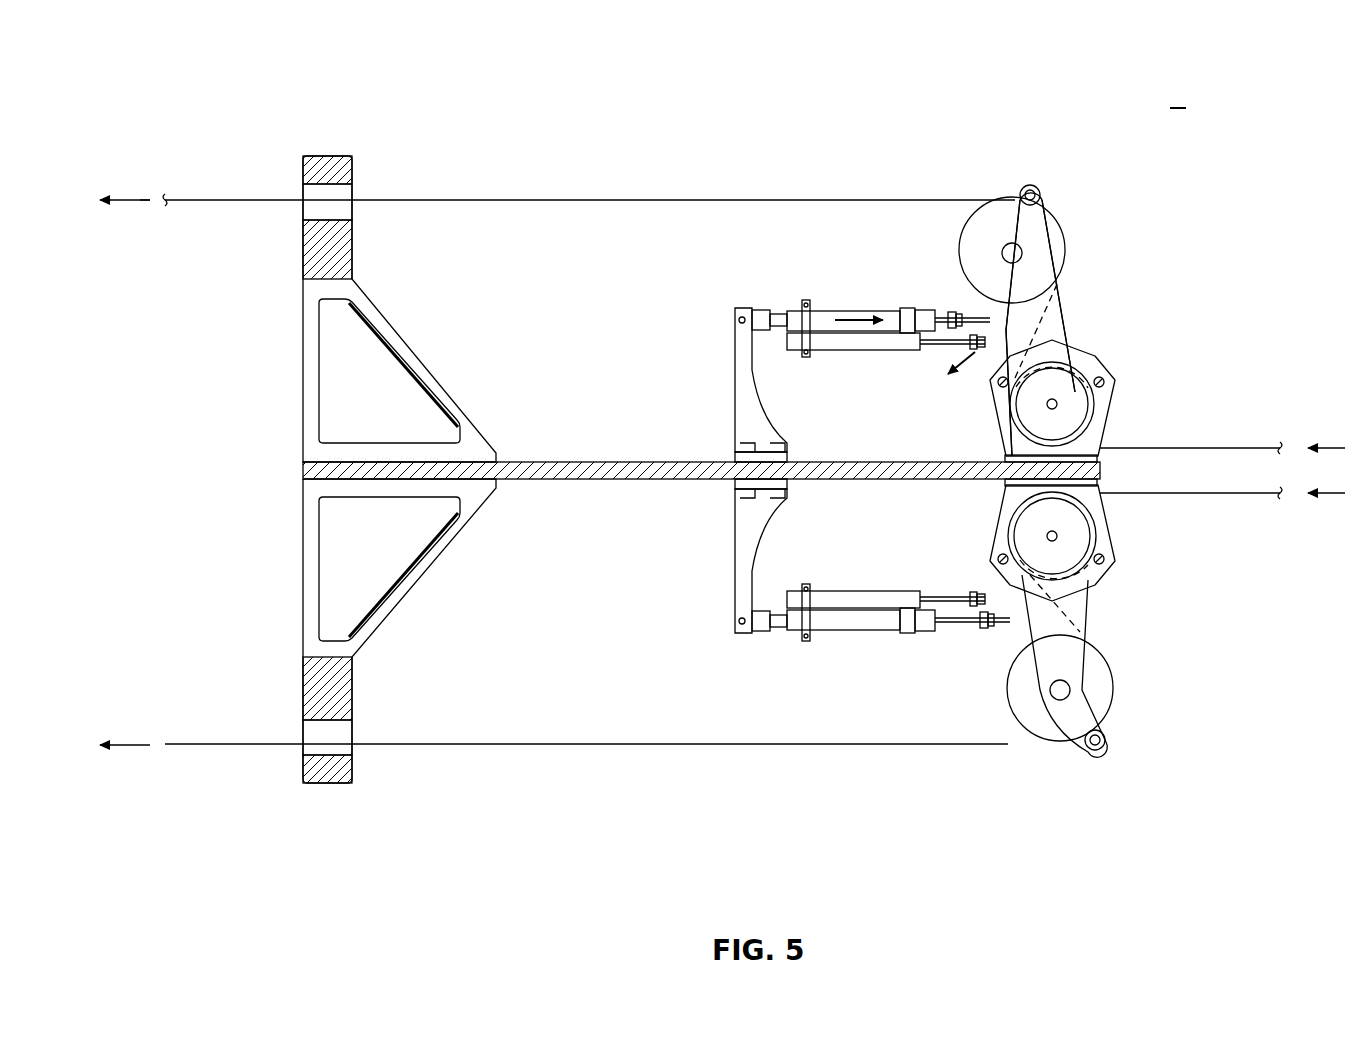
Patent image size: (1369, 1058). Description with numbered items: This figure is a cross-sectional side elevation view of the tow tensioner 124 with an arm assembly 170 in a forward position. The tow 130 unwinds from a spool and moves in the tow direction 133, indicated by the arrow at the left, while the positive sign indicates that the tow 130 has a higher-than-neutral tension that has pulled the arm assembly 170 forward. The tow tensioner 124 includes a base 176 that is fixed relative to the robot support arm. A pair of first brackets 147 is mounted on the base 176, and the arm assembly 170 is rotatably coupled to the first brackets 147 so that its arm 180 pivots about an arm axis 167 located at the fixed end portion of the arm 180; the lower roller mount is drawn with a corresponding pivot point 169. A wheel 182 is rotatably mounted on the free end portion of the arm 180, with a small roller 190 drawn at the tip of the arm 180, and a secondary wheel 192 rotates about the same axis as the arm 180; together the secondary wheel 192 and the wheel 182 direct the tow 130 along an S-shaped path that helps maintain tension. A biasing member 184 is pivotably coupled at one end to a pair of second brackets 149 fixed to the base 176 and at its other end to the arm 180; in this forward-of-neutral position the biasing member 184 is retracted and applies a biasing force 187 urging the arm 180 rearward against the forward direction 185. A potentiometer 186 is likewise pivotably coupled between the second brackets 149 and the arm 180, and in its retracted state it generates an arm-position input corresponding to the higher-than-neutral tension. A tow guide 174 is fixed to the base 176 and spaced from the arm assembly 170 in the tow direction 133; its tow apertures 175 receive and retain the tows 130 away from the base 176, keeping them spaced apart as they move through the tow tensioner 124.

The tow tensioner 124 is at (1200, 84).
The tow 130 is at (714, 198).
The tow direction 133 is at (140, 197).
The first brackets 147 is at (1098, 432).
The second brackets 149 is at (746, 394).
The arm axis 167 is at (1057, 400).
The pivot axis 169 is at (1058, 538).
The arm assembly 170 is at (1025, 176).
The tow guide 174 is at (338, 153).
The tow apertures 175 is at (308, 186).
The base 176 is at (538, 460).
The arm 180 is at (1048, 226).
The wheel 182 is at (1056, 250).
The biasing member 184 is at (810, 310).
The forward direction 185 is at (970, 372).
The potentiometer 186 is at (853, 348).
The biasing force 187 is at (860, 316).
The roller 190 is at (1042, 190).
The secondary wheel 192 is at (1068, 328).